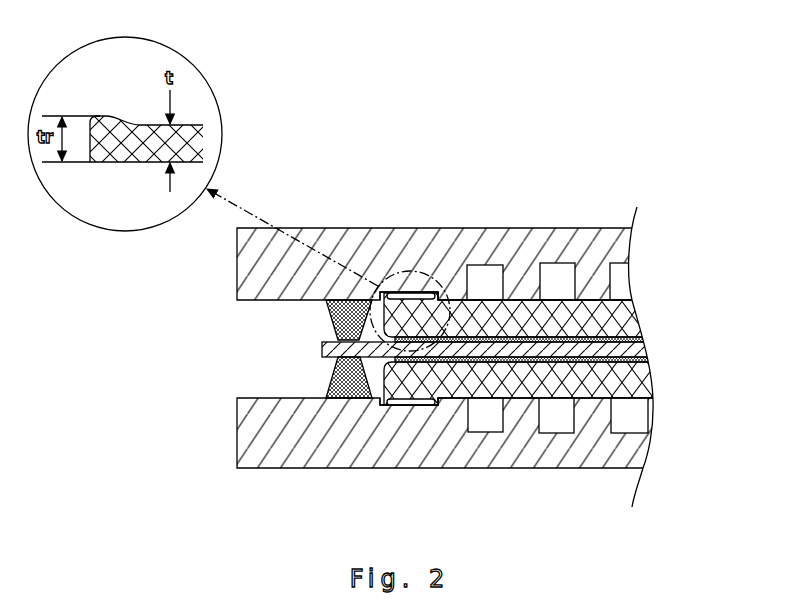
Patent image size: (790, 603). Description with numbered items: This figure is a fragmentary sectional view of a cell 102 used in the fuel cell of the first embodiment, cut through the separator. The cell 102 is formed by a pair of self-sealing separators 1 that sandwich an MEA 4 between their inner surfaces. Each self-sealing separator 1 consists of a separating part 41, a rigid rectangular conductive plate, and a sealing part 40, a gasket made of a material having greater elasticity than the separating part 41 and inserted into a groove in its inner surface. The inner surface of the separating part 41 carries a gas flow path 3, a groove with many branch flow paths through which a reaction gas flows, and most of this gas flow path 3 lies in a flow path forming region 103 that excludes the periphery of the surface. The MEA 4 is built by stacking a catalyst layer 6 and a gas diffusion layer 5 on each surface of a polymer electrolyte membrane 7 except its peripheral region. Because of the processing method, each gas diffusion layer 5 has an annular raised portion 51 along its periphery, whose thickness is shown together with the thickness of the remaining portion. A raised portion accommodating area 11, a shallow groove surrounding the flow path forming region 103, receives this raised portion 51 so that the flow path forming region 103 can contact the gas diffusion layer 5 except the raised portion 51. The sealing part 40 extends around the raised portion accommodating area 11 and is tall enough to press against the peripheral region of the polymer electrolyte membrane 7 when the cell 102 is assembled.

The cell 102 is at (586, 139).
The self-sealing separator 1 is at (595, 225).
The separating part 41 is at (629, 248).
The gas flow path 3 is at (553, 268).
The flow path forming region 103 is at (528, 304).
The gas diffusion layer 5 is at (633, 320).
The catalyst layer 6 is at (636, 338).
The polymer electrolyte membrane 7 is at (322, 350).
The MEA 4 is at (462, 348).
The sealing part 40 is at (326, 316).
The raised portion 51 is at (410, 297).
The raised portion accommodating area 11 is at (430, 295).